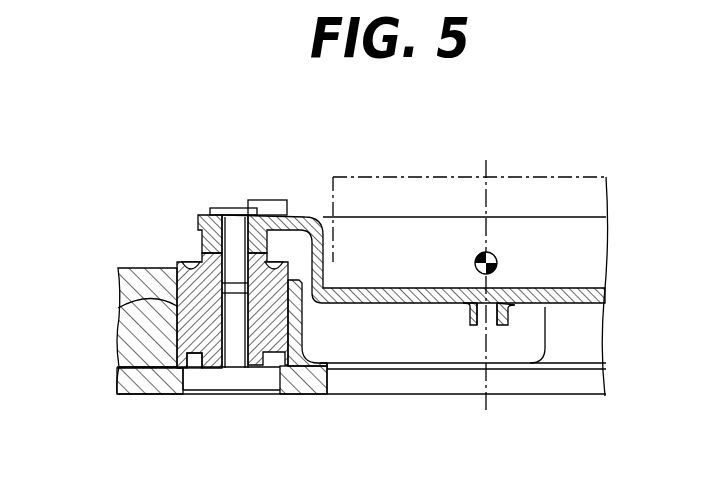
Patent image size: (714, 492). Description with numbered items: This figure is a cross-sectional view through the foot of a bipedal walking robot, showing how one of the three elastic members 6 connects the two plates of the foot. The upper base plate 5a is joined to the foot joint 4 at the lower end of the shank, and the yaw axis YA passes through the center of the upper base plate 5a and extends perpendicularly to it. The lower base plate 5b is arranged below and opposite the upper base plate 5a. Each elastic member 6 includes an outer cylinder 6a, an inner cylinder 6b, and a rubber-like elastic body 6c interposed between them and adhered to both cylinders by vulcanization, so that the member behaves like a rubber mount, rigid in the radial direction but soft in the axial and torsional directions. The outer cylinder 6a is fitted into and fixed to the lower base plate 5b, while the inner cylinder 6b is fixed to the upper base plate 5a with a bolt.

The foot joint 4 is at (332, 197).
The upper base plate 5a is at (383, 217).
The lower base plate 5b is at (552, 370).
The elastic member 6 is at (180, 257).
The outer cylinder 6a is at (117, 308).
The inner cylinder 6b is at (210, 325).
The rubber-like elastic body 6c is at (200, 345).
The yaw axis YA is at (488, 198).